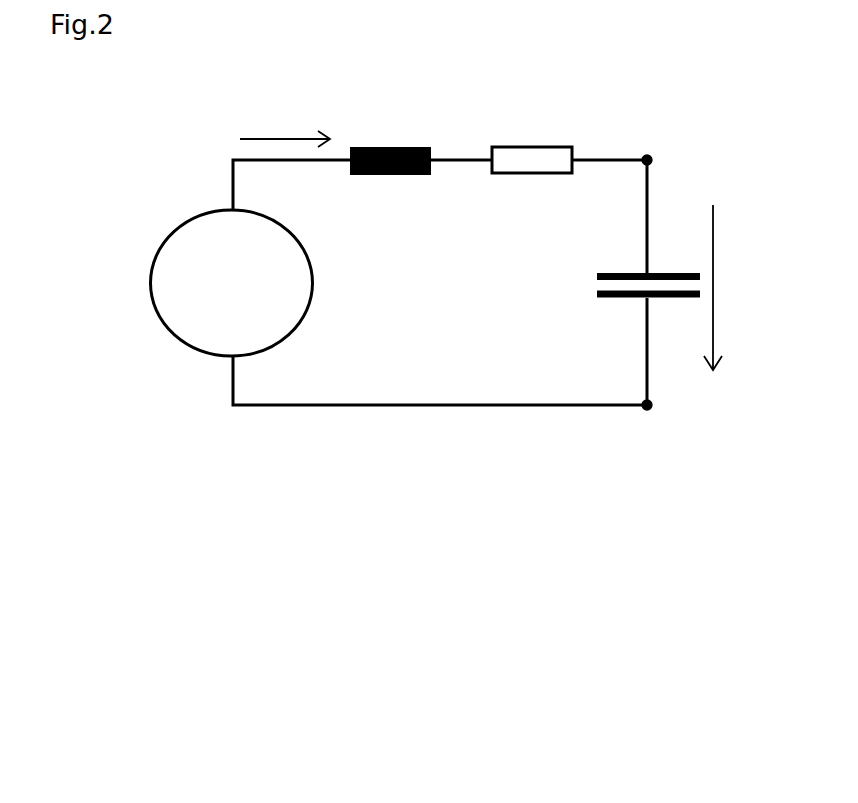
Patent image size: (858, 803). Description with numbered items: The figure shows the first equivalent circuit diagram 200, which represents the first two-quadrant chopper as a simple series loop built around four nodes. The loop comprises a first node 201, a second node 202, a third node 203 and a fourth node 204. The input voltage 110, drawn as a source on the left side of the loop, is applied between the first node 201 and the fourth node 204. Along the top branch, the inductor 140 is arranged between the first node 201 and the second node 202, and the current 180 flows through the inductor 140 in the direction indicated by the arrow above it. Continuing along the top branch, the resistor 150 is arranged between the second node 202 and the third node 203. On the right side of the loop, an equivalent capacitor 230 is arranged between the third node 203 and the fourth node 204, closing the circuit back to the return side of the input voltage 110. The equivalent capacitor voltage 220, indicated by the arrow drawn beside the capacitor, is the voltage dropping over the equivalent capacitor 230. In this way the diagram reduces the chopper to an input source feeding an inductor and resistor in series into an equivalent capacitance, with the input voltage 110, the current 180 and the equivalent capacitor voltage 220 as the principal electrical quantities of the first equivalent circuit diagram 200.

The input voltage 110 is at (232, 283).
The inductor 140 is at (390, 147).
The resistor 150 is at (532, 147).
The current 180 is at (277, 139).
The first equivalent circuit diagram 200 is at (222, 436).
The first node 201 is at (232, 160).
The second node 202 is at (466, 158).
The third node 203 is at (650, 158).
The fourth node 204 is at (652, 408).
The equivalent capacitor voltage 220 is at (713, 295).
The equivalent capacitor 230 is at (616, 297).